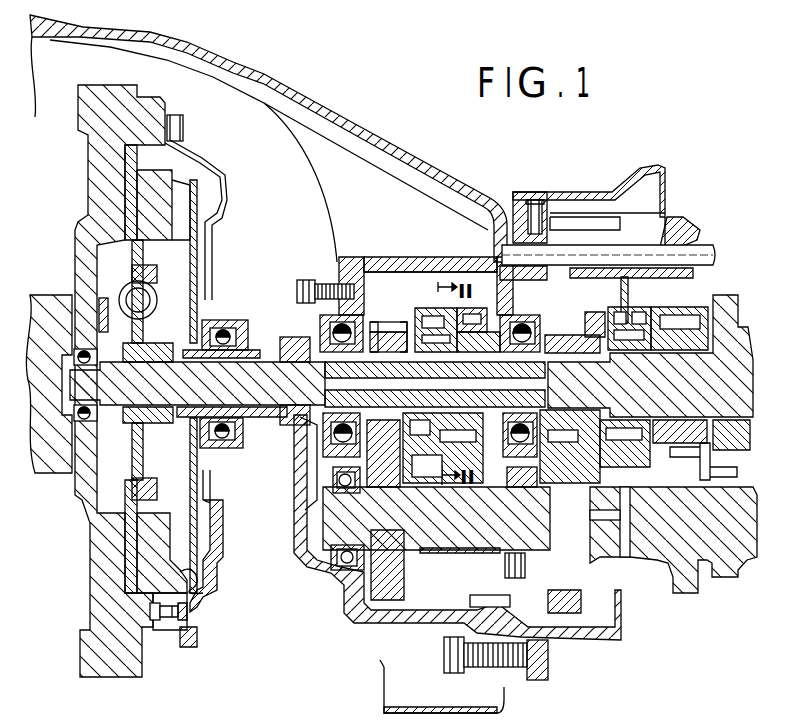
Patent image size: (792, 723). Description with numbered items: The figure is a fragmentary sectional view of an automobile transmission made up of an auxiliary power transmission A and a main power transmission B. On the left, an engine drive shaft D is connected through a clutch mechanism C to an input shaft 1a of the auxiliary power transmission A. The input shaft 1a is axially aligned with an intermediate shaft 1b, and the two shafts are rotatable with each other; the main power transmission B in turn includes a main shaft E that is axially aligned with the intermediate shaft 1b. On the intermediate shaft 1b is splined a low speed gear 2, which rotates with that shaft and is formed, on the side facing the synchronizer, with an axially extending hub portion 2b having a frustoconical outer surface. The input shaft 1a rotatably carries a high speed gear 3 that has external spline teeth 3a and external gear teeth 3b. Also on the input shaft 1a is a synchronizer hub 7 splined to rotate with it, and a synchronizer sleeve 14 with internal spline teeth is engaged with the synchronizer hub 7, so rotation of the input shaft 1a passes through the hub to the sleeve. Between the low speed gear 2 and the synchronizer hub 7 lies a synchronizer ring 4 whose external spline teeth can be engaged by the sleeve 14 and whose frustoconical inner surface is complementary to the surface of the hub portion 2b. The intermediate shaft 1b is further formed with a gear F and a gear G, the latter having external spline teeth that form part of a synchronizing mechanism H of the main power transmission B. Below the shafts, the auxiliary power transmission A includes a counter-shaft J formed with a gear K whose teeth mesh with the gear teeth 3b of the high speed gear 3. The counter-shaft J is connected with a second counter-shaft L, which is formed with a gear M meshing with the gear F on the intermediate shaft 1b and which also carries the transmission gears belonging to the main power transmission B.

The input shaft 1a is at (273, 367).
The intermediate shaft 1b is at (411, 433).
The low speed gear 2 is at (500, 360).
The hub portion 2b is at (478, 373).
The high speed gear 3 is at (396, 345).
The external spline teeth 3a is at (413, 330).
The external gear teeth 3b is at (381, 326).
The synchronizer ring 4 is at (484, 310).
The synchronizer hub 7 is at (478, 413).
The synchronizer sleeve 14 is at (440, 316).
The auxiliary power transmission A is at (403, 300).
The main power transmission B is at (647, 307).
The clutch mechanism C is at (78, 504).
The engine drive shaft D is at (46, 300).
The main shaft E is at (752, 380).
The gear F is at (563, 338).
The gear G is at (590, 322).
The synchronizing mechanism H is at (668, 318).
The counter-shaft J is at (437, 553).
The gear K is at (404, 588).
The second counter-shaft L is at (590, 560).
The gear M is at (587, 463).